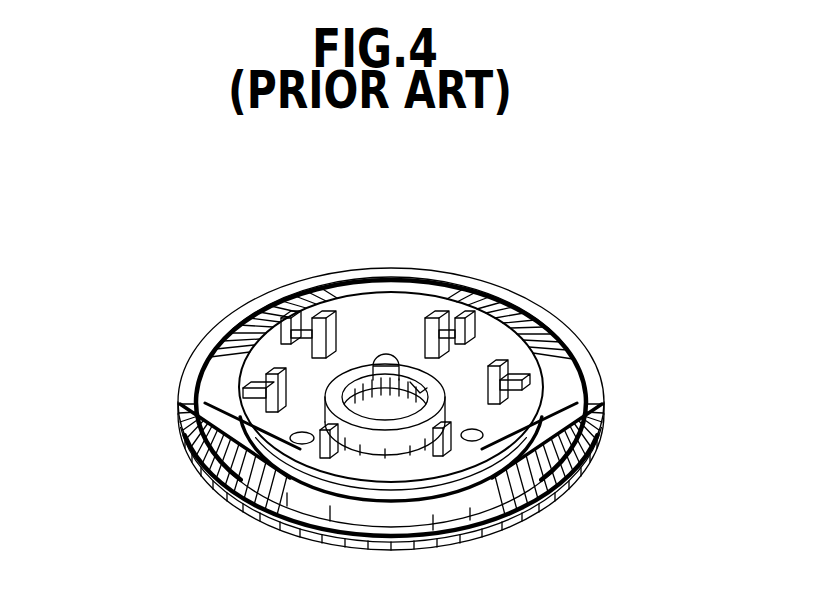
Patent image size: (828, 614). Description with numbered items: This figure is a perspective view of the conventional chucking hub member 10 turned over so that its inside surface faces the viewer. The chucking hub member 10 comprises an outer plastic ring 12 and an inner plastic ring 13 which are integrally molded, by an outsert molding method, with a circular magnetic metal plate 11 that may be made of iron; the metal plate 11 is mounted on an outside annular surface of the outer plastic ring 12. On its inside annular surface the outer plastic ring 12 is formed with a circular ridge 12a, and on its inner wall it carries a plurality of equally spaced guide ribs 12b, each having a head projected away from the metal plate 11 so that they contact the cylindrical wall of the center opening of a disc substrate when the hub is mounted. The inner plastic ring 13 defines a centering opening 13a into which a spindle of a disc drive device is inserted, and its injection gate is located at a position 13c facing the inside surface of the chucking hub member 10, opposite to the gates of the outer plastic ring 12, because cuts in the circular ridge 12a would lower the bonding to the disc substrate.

The chucking hub member 10 is at (543, 304).
The circular magnetic metal plate 11 is at (283, 530).
The outer plastic ring 12 is at (226, 477).
The circular ridge 12a is at (372, 273).
The guide ribs 12b is at (322, 308).
The inner plastic ring 13 is at (325, 378).
The centering opening 13a is at (418, 384).
The injection gate position 13c is at (392, 355).